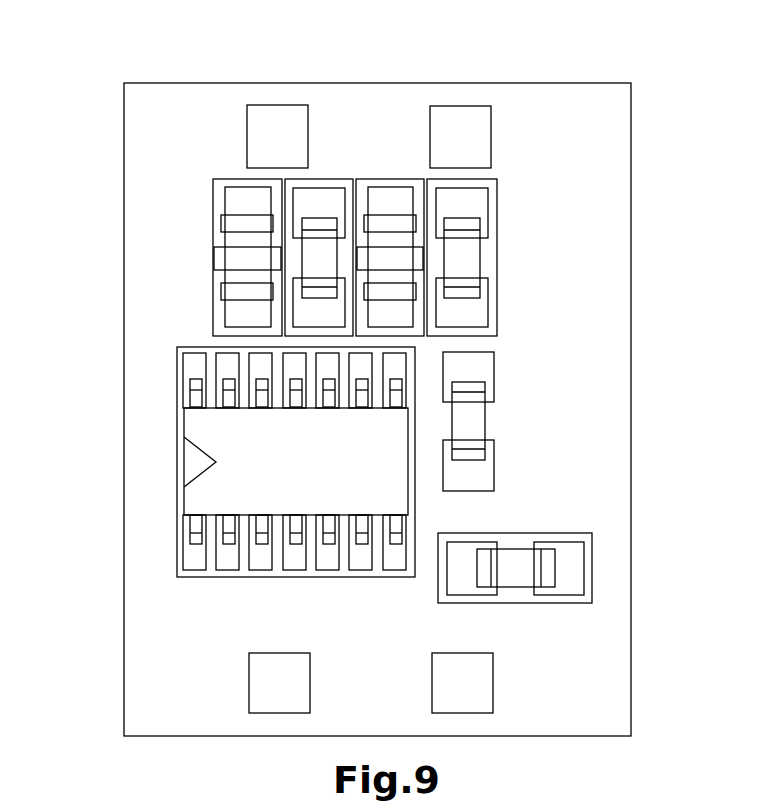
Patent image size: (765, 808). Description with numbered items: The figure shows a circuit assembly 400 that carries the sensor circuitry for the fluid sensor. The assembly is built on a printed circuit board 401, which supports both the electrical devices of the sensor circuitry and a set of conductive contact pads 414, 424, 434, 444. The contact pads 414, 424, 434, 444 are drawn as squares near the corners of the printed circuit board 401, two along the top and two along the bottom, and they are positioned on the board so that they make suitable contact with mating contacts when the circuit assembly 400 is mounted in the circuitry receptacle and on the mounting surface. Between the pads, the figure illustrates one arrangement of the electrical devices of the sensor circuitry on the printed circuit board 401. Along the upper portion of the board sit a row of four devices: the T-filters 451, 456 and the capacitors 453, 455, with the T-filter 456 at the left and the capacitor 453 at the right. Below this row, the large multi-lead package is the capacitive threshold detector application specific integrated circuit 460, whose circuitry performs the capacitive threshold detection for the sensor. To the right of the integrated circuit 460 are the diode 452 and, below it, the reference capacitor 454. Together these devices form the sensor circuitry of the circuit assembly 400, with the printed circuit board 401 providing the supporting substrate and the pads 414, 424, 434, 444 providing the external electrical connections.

The circuit assembly 400 is at (72, 194).
The printed circuit board 401 is at (596, 363).
The conductive contact pad 414 is at (278, 688).
The conductive contact pad 424 is at (456, 690).
The conductive contact pad 434 is at (465, 140).
The conductive contact pad 444 is at (271, 135).
The T-filter 451 is at (397, 203).
The diode 452 is at (475, 420).
The capacitor 453 is at (468, 256).
The reference capacitor 454 is at (548, 533).
The capacitor 455 is at (325, 200).
The T-filter 456 is at (240, 198).
The capacitive threshold detector application specific integrated circuit (CTD-ASIC) 460 is at (215, 492).